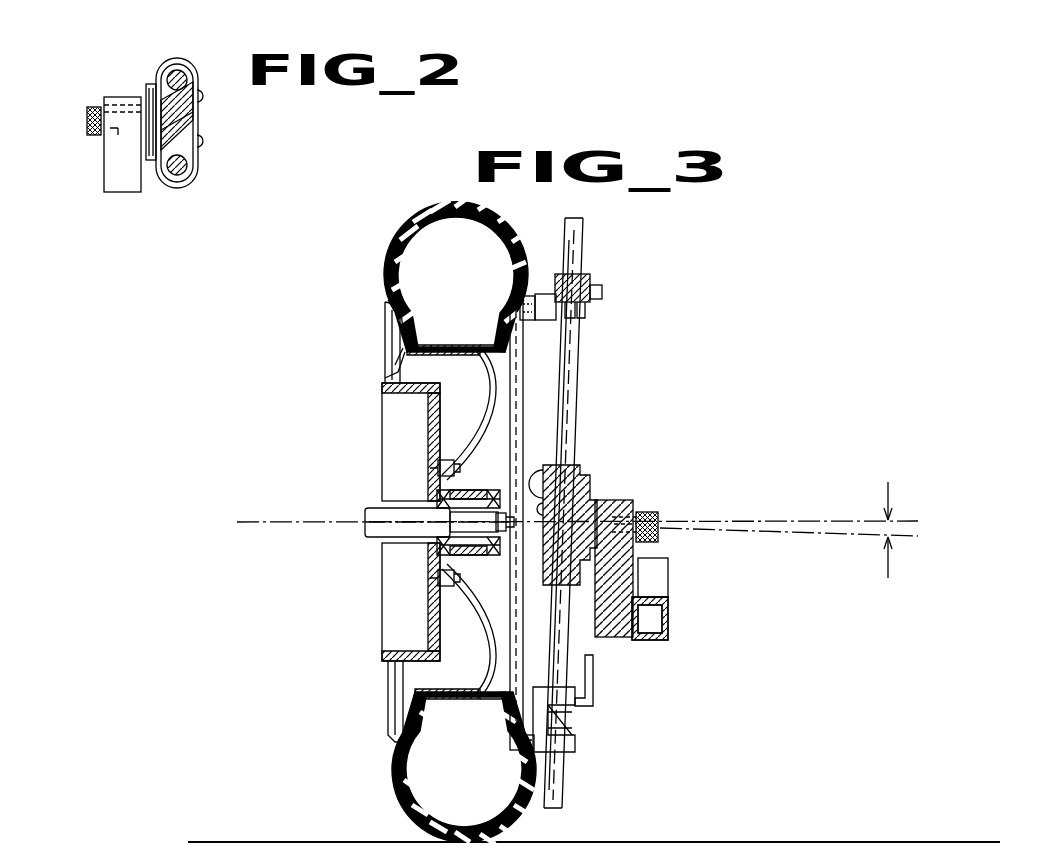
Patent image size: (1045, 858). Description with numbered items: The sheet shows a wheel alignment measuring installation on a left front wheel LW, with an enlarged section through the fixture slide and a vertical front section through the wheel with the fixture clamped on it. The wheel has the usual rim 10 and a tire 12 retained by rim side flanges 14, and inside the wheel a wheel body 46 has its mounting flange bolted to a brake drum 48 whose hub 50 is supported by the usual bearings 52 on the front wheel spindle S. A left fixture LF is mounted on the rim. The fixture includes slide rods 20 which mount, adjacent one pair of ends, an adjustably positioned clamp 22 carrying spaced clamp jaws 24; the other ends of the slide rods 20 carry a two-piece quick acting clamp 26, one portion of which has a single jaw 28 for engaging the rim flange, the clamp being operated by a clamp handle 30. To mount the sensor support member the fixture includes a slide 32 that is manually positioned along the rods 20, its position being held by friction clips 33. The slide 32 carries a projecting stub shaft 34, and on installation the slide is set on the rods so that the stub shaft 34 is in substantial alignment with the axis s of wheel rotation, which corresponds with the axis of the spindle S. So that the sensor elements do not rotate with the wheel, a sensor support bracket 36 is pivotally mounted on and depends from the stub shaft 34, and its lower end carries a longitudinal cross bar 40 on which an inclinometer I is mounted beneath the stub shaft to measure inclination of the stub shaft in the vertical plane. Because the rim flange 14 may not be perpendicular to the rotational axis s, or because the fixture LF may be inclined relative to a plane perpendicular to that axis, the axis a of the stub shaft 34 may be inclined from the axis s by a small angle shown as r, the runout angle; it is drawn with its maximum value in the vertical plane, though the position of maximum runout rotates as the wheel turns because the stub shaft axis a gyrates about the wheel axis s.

In FIG. 3, the rim 10 is at (420, 342).
In FIG. 3, the tire 12 is at (392, 283).
In FIG. 3, the rim side flange 14 is at (500, 295).
In FIG. 2, the slide rods 20 is at (177, 70).
In FIG. 3, the slide rods 20 is at (566, 378).
In FIG. 3, the clamp 22 is at (592, 280).
In FIG. 3, the clamp jaws 24 is at (530, 296).
In FIG. 3, the quick acting clamp 26 is at (588, 718).
In FIG. 3, the single jaw 28 is at (520, 750).
In FIG. 3, the clamp handle 30 is at (595, 668).
In FIG. 2, the slide 32 is at (211, 125).
In FIG. 3, the slide 32 is at (595, 476).
In FIG. 2, the friction clips 33 is at (200, 94).
In FIG. 3, the friction clips 33 is at (548, 468).
In FIG. 2, the stub shaft 34 is at (106, 140).
In FIG. 3, the stub shaft 34 is at (614, 504).
In FIG. 2, the sensor support bracket 36 is at (104, 173).
In FIG. 3, the sensor support bracket 36 is at (642, 514).
In FIG. 3, the cross bar 40 is at (668, 622).
In FIG. 3, the wheel body 46 is at (440, 438).
In FIG. 3, the brake drum 48 is at (388, 582).
In FIG. 3, the hub 50 is at (485, 562).
In FIG. 3, the bearings 52 is at (458, 480).
In FIG. 3, the left front wheel LW is at (392, 253).
In FIG. 3, the left fixture LF is at (593, 346).
In FIG. 3, the wheel spindle S is at (380, 510).
In FIG. 3, the axis of wheel rotation s is at (316, 521).
In FIG. 3, the inclinometer I is at (690, 586).
In FIG. 3, the stub shaft axis a is at (768, 528).
In FIG. 3, the runout angle r is at (895, 518).